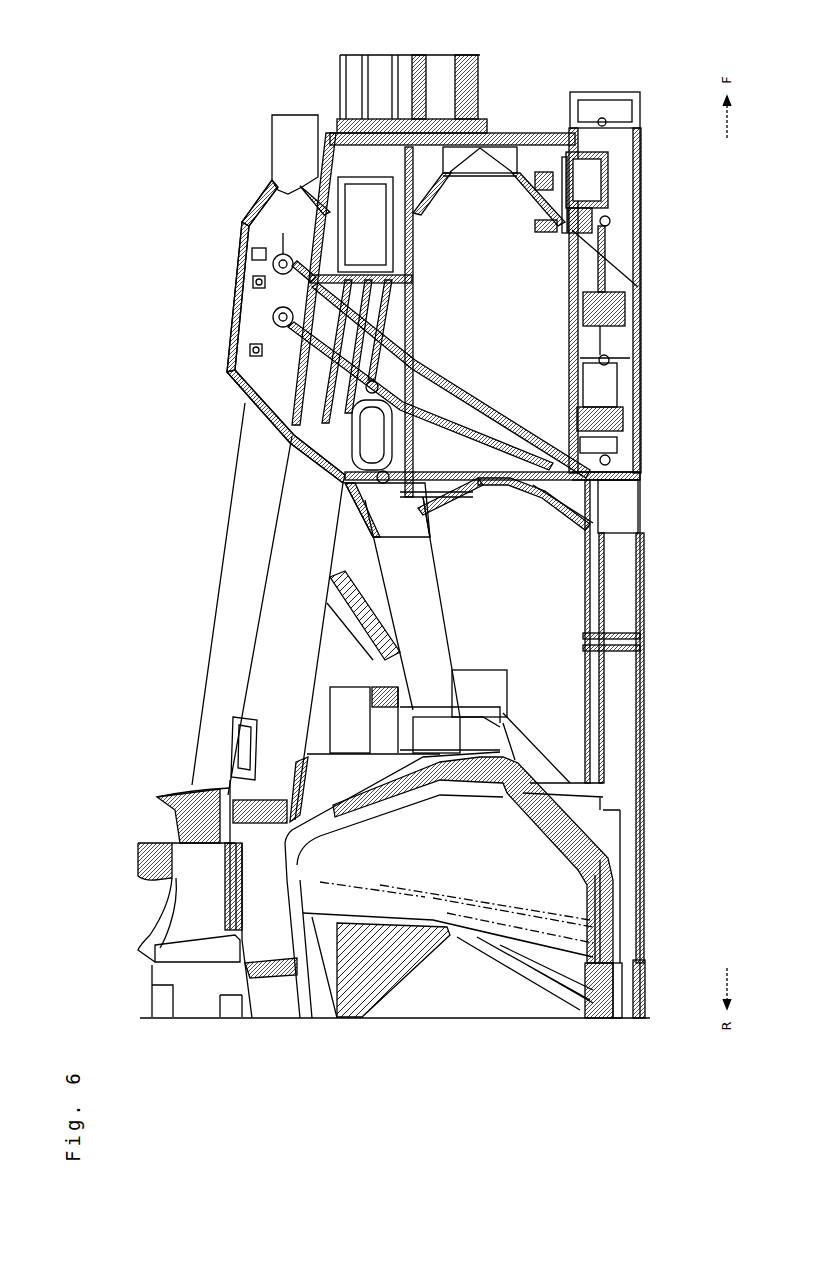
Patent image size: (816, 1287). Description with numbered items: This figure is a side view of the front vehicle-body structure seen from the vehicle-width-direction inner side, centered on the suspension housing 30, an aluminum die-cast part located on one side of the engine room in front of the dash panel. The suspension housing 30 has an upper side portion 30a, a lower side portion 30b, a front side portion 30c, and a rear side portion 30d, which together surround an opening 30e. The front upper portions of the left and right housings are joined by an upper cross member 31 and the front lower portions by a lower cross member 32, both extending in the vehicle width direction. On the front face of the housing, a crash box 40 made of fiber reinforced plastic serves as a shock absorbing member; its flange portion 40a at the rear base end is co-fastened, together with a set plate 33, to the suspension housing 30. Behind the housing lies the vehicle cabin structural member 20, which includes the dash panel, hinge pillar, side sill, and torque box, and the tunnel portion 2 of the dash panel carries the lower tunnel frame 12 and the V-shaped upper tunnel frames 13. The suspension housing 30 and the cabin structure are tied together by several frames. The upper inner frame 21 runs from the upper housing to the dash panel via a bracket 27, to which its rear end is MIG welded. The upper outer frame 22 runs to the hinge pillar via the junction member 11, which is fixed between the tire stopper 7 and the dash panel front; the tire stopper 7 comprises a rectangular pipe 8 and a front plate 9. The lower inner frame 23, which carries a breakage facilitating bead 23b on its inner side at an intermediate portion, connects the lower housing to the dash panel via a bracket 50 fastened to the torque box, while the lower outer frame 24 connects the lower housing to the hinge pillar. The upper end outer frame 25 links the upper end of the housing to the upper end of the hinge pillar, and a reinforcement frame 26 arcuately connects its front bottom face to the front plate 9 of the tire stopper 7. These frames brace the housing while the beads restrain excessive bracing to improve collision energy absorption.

The tunnel portion 2 is at (449, 885).
The tire stopper 7 is at (370, 693).
The rectangular pipe 8 is at (372, 720).
The front plate 9 is at (490, 670).
The junction member 11 is at (427, 707).
The lower tunnel frame 12 is at (637, 1003).
The upper tunnel frame 13 is at (217, 930).
The vehicle cabin structural member 20 is at (313, 750).
The upper inner frame 21 is at (260, 657).
The upper outer frame 22 is at (428, 580).
The lower inner frame 23 is at (612, 672).
The breakage facilitating bead 23b is at (644, 640).
The lower outer frame 24 is at (587, 597).
The upper end outer frame 25 is at (228, 563).
The reinforcement frame 26 is at (347, 608).
The bracket 27 is at (233, 723).
The suspension housing 30 is at (419, 543).
The upper side portion 30a is at (453, 309).
The lower side portion 30b is at (645, 337).
The front side portion 30c is at (523, 133).
The rear side portion 30d is at (488, 487).
The opening 30e is at (262, 265).
The upper cross member 31 is at (412, 243).
The lower cross member 32 is at (608, 190).
The set plate 33 is at (382, 120).
The crash box 40 is at (478, 78).
The flange portion 40a is at (437, 113).
The bracket 50 is at (593, 803).